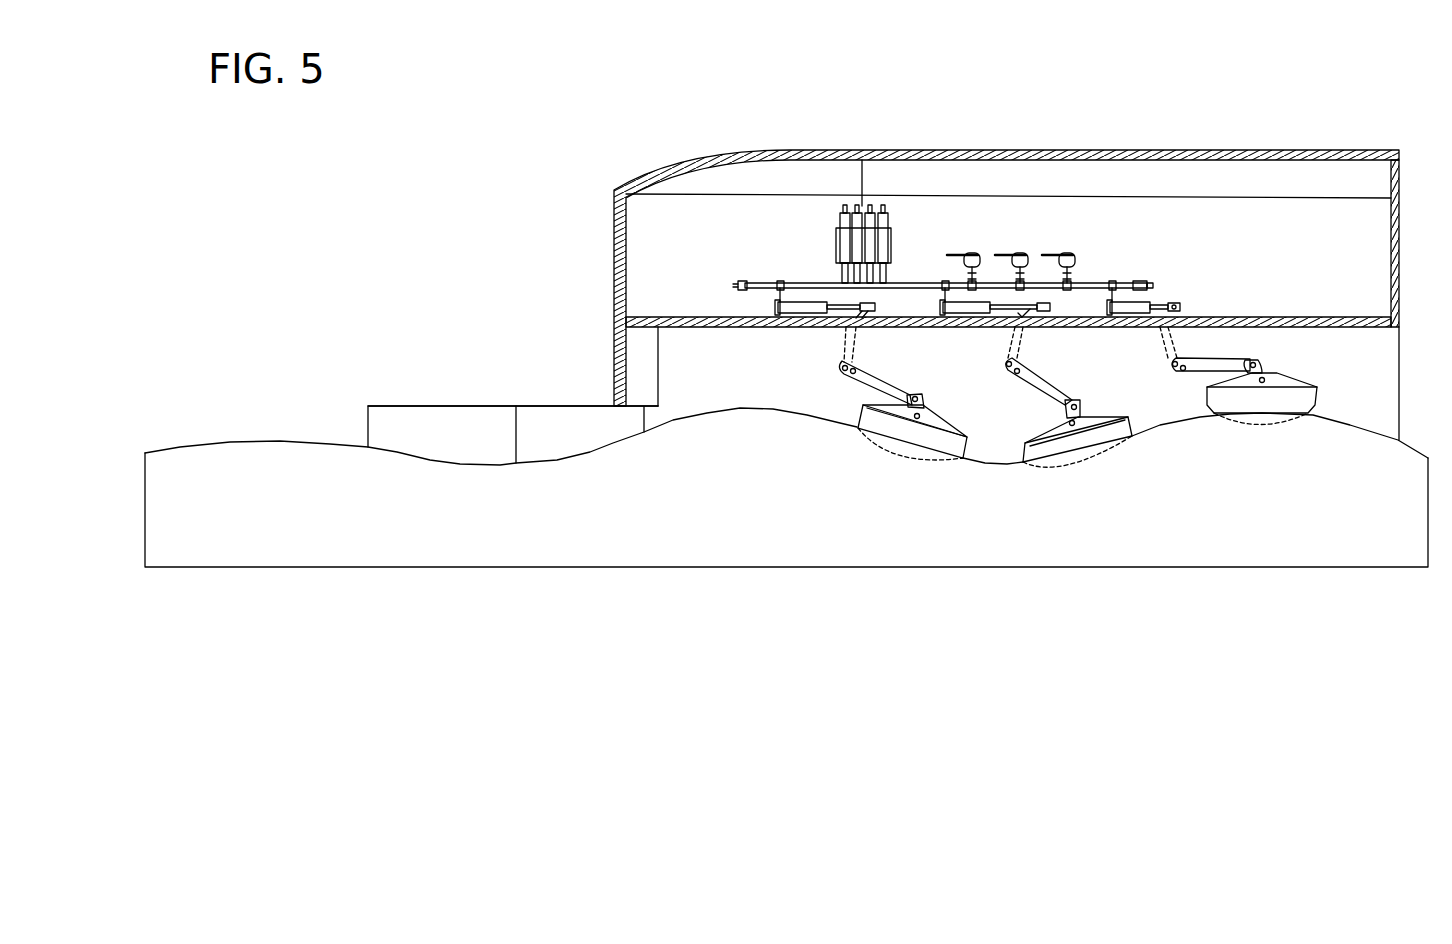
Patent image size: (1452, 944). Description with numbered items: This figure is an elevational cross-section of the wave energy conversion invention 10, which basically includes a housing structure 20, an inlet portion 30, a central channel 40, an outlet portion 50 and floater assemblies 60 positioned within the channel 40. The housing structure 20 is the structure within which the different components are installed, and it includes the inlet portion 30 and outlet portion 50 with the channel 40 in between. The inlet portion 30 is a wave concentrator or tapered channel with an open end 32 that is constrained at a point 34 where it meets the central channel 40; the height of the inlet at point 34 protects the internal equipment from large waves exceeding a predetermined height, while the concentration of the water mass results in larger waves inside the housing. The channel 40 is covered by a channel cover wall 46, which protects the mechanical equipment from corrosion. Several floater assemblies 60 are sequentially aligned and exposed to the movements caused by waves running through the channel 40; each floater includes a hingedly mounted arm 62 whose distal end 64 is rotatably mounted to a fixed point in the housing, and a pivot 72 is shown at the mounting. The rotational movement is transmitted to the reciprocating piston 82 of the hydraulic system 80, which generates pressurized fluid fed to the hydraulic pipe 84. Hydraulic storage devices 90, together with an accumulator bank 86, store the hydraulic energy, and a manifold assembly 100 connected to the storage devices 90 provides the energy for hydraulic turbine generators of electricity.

The wave energy conversion invention 10 is at (1204, 120).
The housing structure 20 is at (1006, 258).
The inlet portion 30 is at (513, 396).
The open end 32 is at (418, 404).
The constraining point 34 is at (612, 404).
The central channel 40 is at (995, 439).
The channel cover wall 46 is at (729, 328).
The outlet portion 50 is at (1389, 424).
The floater assembly 60 is at (886, 469).
The arm 62 is at (906, 390).
The distal end 64 is at (872, 372).
The pivot shaft 72 is at (843, 343).
The hydraulic system 80 is at (963, 239).
The reciprocating piston 82 is at (802, 303).
The hydraulic pipe 84 is at (845, 282).
The accumulator bank 86 is at (845, 244).
The hydraulic storage device 90 is at (1027, 223).
The manifold assembly 100 is at (972, 232).